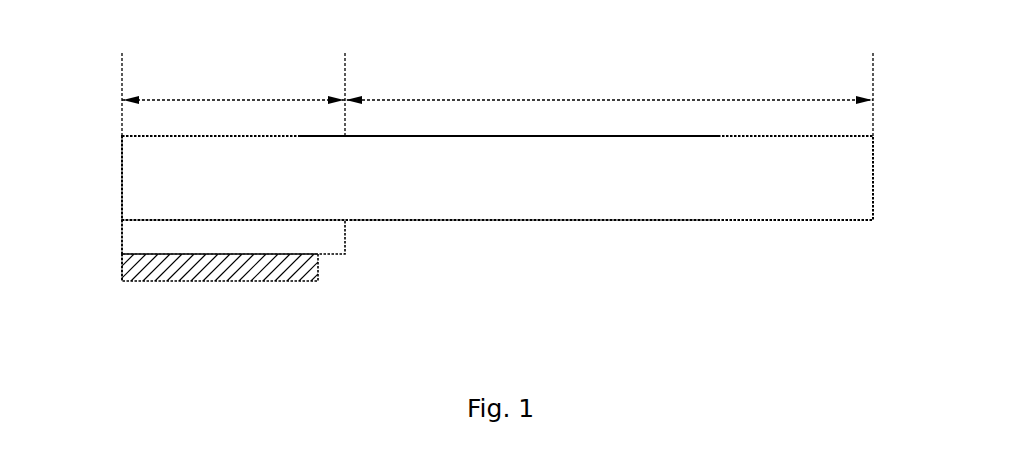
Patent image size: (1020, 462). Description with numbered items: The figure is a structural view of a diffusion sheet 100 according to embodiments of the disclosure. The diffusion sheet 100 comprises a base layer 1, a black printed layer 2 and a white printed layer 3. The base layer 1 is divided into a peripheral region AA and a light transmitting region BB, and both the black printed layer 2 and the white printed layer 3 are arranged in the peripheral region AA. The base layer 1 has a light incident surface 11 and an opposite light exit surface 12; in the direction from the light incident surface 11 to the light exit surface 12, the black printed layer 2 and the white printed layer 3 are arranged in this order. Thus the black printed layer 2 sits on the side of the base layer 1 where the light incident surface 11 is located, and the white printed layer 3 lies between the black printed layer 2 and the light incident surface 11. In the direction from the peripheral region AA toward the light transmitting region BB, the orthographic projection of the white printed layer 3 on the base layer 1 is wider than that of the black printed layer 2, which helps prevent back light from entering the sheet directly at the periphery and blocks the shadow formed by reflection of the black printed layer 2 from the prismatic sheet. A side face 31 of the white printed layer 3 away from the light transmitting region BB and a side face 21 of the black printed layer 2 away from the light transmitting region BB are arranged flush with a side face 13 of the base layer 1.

The diffusion sheet 100 is at (92, 36).
The base layer 1 is at (823, 175).
The light incident surface 11 is at (512, 235).
The light exit surface 12 is at (512, 122).
The side face of the base layer 13 is at (107, 162).
The white printed layer 3 is at (178, 236).
The side face of the white printed layer 31 is at (107, 228).
The black printed layer 2 is at (178, 266).
The side face of the black printed layer 21 is at (107, 274).